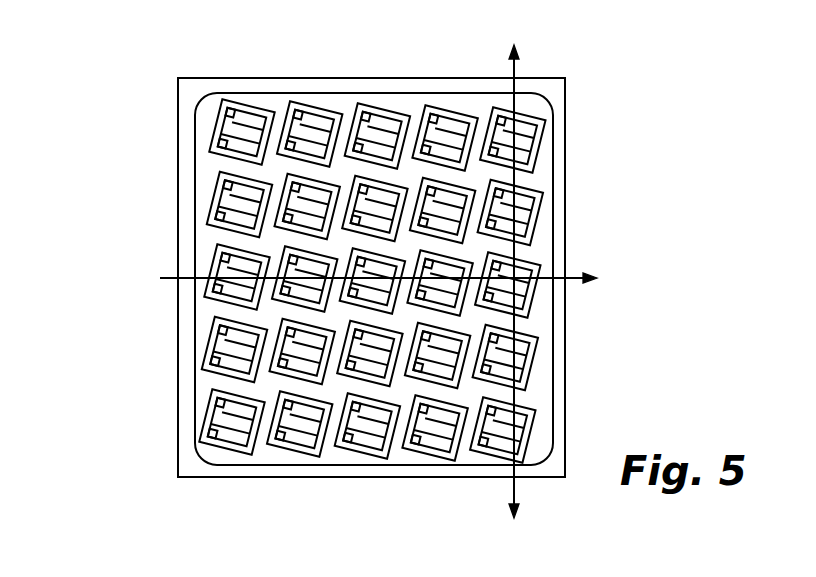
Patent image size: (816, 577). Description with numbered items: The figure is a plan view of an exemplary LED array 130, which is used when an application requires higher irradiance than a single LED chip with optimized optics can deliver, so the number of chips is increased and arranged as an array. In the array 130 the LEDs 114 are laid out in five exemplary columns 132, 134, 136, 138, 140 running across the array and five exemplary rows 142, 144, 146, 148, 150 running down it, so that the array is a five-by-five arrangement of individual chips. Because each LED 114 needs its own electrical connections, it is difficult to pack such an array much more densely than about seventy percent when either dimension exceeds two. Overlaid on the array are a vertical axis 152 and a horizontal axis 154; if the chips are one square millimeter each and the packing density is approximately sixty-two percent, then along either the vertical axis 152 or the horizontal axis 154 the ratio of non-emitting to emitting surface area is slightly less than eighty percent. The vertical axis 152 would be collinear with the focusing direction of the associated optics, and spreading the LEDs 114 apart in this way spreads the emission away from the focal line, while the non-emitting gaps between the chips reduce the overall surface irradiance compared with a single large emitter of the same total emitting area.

The LED array 130 is at (134, 78).
The LEDs 114 is at (389, 277).
The first column 132 is at (244, 86).
The second column 134 is at (320, 86).
The third column 136 is at (388, 86).
The fourth column 138 is at (460, 86).
The fifth column 140 is at (525, 88).
The first row 142 is at (199, 405).
The second row 144 is at (199, 333).
The third row 146 is at (200, 252).
The fourth row 148 is at (200, 179).
The fifth row 150 is at (200, 114).
The vertical axis 152 is at (512, 326).
The horizontal axis 154 is at (570, 278).